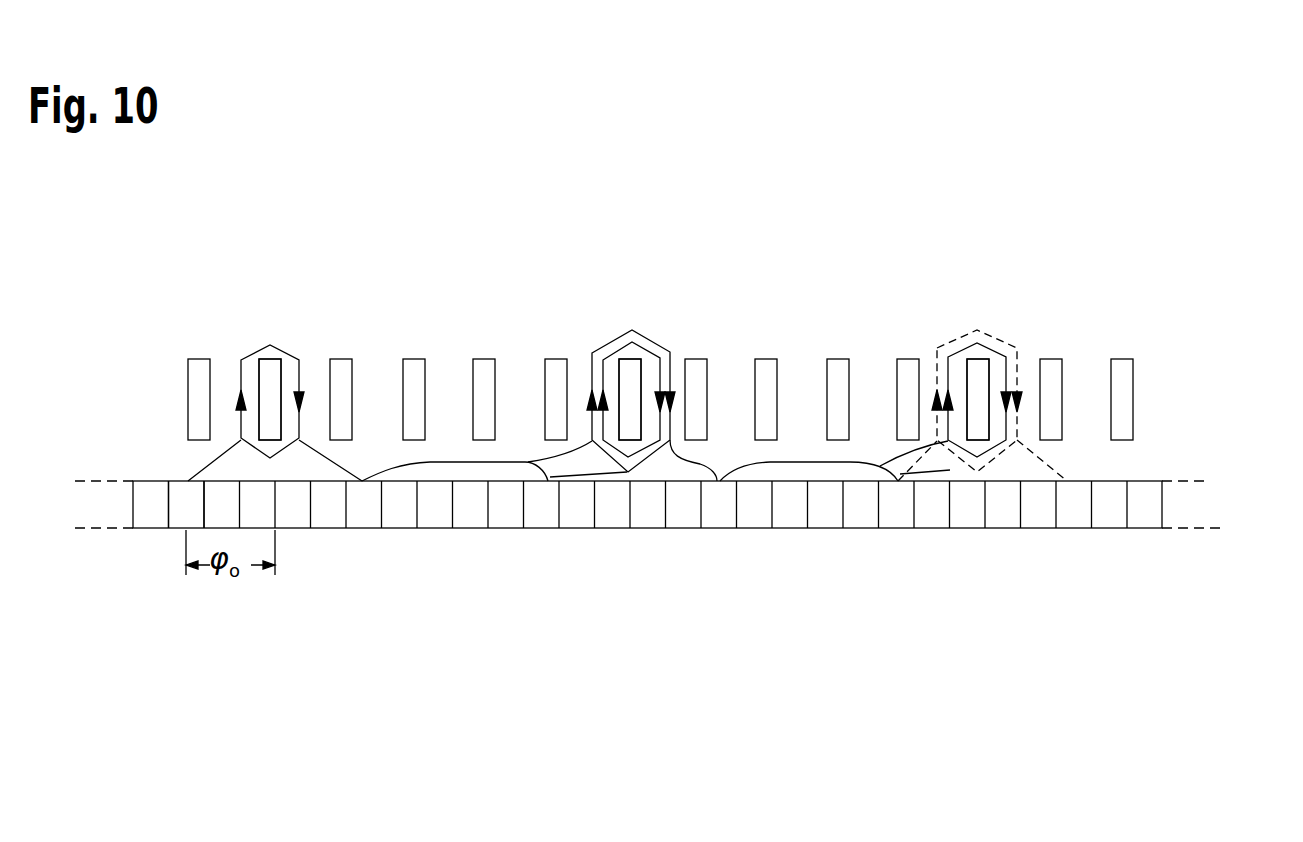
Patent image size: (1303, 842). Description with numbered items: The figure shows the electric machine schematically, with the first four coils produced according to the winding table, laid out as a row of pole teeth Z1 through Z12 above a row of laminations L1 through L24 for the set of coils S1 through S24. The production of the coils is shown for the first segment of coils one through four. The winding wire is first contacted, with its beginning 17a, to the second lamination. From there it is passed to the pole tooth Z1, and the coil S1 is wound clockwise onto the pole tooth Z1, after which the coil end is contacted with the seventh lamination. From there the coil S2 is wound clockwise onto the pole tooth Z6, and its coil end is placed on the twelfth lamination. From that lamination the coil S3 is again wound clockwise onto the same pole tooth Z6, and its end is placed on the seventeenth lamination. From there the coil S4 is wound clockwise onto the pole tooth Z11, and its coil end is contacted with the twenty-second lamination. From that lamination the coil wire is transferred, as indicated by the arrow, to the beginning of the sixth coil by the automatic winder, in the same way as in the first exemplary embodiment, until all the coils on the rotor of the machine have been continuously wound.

The coil S1 is at (263, 352).
The pole tooth Z1 is at (270, 368).
The coil S2 is at (608, 347).
The coil S3 is at (648, 340).
The pole tooth Z6 is at (633, 367).
The coil S4 is at (962, 348).
The pole tooth Z11 is at (977, 368).
The beginning of the winding wire 17a is at (188, 485).
The lamination L1 is at (678, 506).
The pole tooth Z12 is at (726, 399).
The coil S24 is at (729, 364).